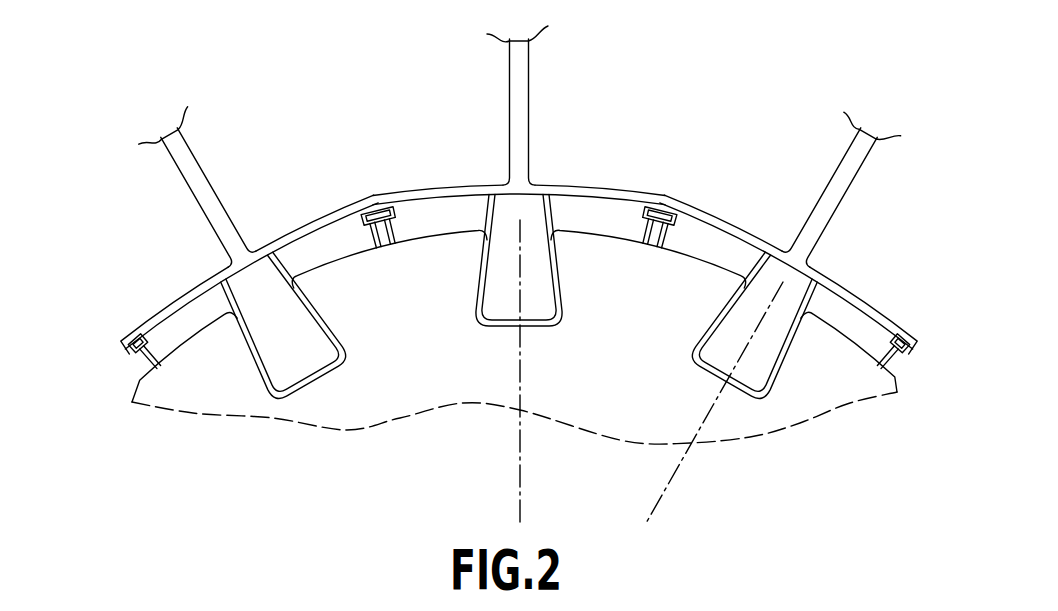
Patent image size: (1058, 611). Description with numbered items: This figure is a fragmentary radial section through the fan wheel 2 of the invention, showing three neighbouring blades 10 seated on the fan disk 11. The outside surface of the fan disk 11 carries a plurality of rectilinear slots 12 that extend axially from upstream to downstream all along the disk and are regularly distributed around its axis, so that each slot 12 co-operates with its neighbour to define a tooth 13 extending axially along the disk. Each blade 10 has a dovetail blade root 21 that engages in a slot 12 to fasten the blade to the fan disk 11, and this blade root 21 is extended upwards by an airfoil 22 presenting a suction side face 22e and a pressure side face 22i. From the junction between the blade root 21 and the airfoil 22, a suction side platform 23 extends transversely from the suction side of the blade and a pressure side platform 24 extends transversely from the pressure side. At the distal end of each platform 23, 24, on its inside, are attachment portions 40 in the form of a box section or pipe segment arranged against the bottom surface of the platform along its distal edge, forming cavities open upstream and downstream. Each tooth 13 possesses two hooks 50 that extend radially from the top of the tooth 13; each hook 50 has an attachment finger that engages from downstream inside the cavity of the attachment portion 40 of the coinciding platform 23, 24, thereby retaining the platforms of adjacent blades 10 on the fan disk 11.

The fan wheel 2 is at (690, 118).
The blade 10 is at (541, 119).
The fan disk 11 is at (208, 391).
The slot 12 is at (330, 377).
The tooth 13 is at (358, 254).
The blade root 21 is at (306, 362).
The airfoil 22 is at (512, 118).
The pressure side face 22i is at (509, 60).
The suction side face 22e is at (529, 57).
The suction side platform 23 is at (607, 192).
The pressure side platform 24 is at (428, 192).
The attachment portion 40 is at (401, 209).
The hook 50 is at (398, 250).